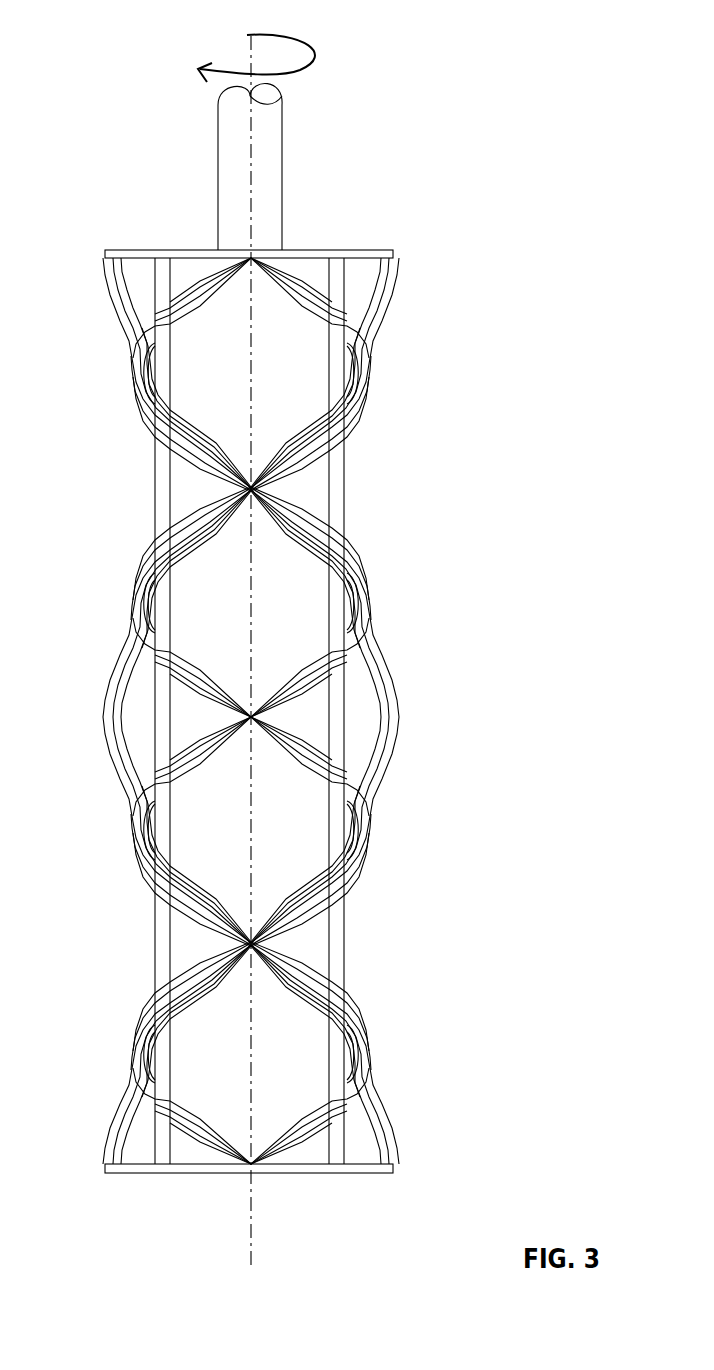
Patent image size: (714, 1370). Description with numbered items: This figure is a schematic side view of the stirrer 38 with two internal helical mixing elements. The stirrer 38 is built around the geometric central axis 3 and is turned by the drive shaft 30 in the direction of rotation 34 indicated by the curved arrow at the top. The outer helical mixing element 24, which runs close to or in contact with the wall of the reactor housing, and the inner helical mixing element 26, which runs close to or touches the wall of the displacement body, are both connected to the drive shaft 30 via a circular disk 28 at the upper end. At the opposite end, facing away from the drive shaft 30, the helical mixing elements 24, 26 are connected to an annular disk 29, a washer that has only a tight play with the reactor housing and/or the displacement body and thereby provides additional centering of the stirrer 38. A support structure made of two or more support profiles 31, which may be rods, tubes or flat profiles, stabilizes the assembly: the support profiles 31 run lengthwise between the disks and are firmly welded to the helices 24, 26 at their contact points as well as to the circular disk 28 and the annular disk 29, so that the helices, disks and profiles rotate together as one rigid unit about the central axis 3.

The geometric central axis 3 is at (252, 183).
The outer helical mixing element 24 is at (120, 293).
The inner helical mixing element 26 is at (355, 377).
The circular disk 28 is at (337, 252).
The annular disk 29 is at (277, 1170).
The drive shaft 30 is at (263, 133).
The support profiles 31 is at (337, 447).
The direction of rotation 34 is at (273, 58).
The stirrer 38 is at (195, 293).